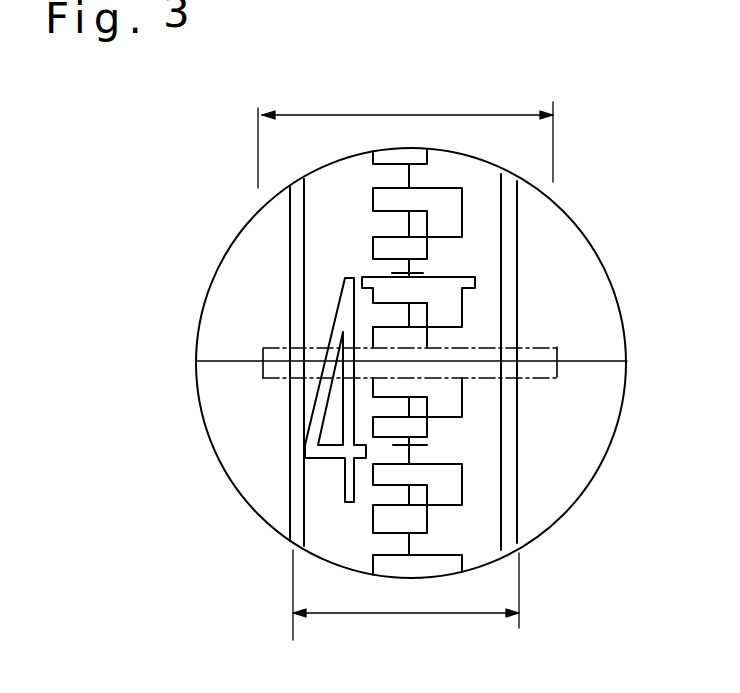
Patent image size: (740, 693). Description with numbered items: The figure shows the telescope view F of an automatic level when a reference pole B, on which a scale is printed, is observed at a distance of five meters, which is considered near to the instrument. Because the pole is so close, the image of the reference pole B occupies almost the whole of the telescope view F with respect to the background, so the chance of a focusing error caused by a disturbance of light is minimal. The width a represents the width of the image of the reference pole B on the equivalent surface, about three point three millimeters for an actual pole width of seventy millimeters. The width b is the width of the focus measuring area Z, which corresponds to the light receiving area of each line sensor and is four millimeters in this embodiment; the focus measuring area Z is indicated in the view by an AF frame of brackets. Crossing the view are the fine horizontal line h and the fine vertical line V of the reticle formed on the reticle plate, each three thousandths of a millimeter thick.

The reference pole B is at (308, 258).
The telescope view F is at (578, 232).
The fine horizontal line h is at (600, 358).
The focus measuring area Z is at (265, 356).
The fine vertical line V is at (413, 545).
The width of the image of the reference pole a is at (406, 595).
The width of the focus measuring area b is at (405, 136).